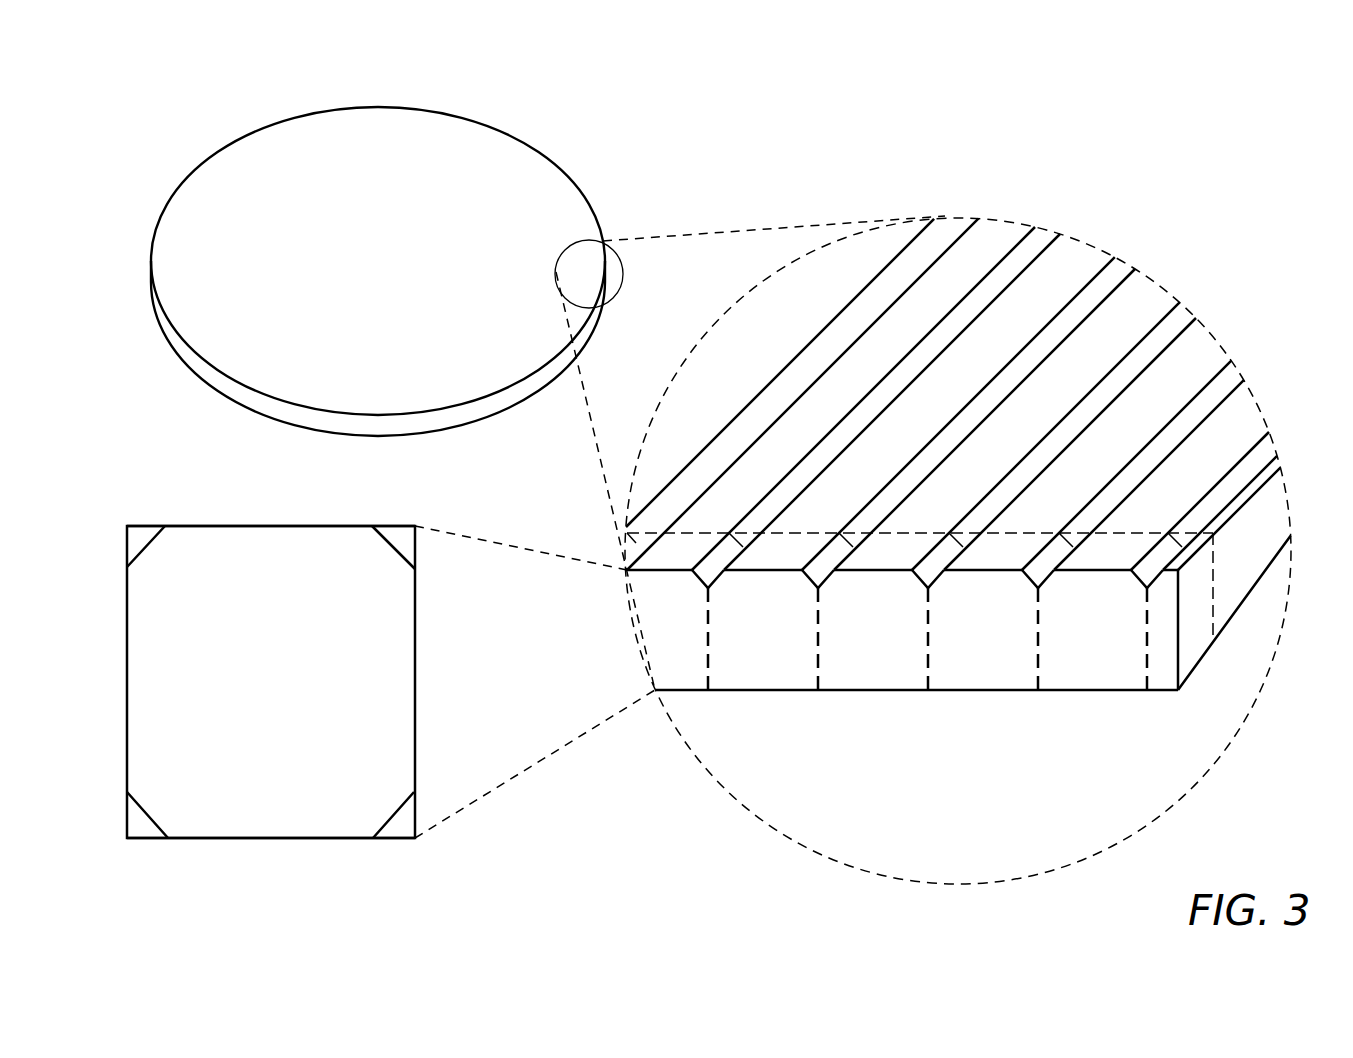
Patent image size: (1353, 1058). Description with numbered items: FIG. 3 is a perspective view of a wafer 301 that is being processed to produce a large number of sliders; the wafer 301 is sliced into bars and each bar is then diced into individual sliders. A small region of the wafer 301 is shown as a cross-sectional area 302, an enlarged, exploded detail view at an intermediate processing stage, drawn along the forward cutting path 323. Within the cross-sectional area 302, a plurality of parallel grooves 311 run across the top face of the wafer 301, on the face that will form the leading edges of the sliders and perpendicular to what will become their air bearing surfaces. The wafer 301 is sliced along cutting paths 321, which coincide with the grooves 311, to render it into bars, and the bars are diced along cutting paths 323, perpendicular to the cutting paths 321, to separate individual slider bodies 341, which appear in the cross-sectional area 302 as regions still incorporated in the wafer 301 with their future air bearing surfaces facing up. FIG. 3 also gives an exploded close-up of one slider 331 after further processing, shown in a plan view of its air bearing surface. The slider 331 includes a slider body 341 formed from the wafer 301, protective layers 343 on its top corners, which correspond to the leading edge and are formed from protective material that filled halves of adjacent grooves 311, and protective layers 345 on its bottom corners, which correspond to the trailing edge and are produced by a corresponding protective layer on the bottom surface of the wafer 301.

The wafer 301 is at (139, 143).
The cross-sectional area 302 is at (580, 224).
The grooves 311 is at (1272, 440).
The cutting paths 321 is at (1147, 690).
The cutting paths 323 is at (1213, 587).
The slider body 341 is at (299, 696).
The protective layers 343 is at (385, 526).
The protective layers 345 is at (142, 838).
The slider 331 is at (291, 846).